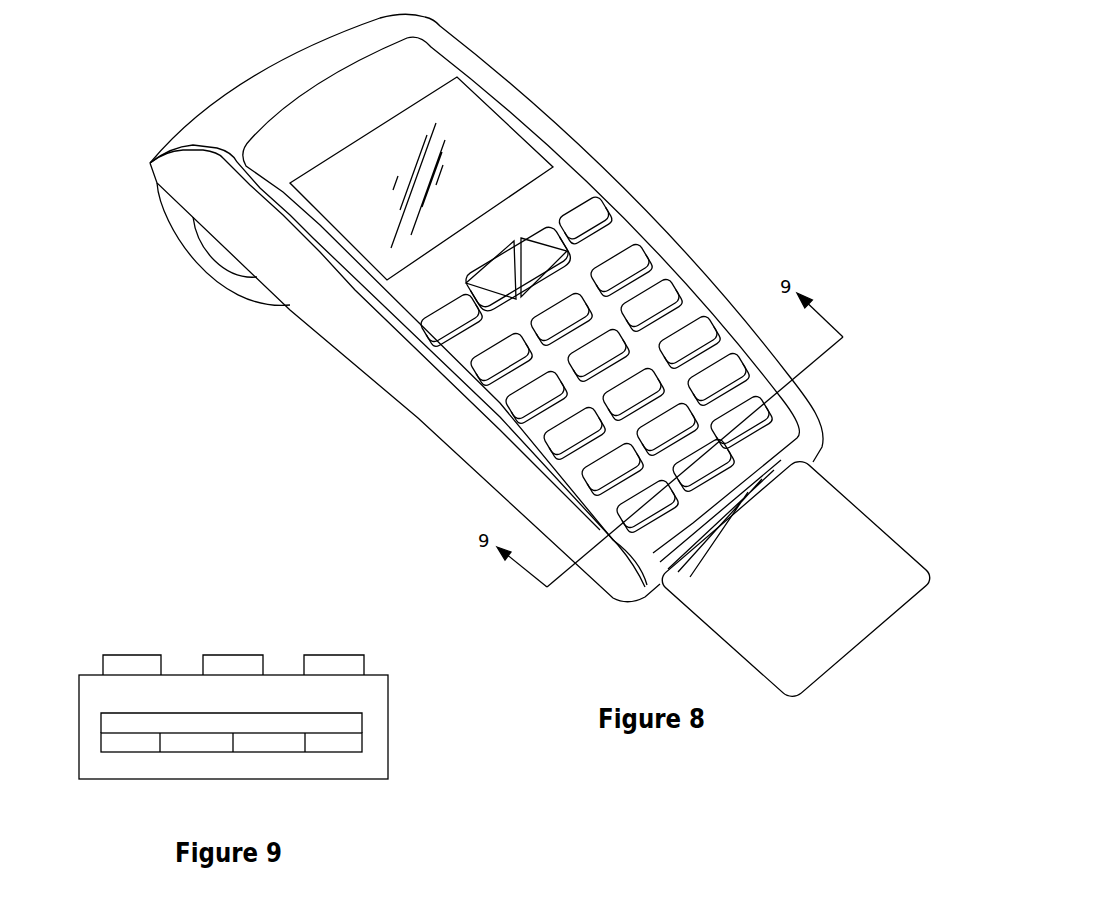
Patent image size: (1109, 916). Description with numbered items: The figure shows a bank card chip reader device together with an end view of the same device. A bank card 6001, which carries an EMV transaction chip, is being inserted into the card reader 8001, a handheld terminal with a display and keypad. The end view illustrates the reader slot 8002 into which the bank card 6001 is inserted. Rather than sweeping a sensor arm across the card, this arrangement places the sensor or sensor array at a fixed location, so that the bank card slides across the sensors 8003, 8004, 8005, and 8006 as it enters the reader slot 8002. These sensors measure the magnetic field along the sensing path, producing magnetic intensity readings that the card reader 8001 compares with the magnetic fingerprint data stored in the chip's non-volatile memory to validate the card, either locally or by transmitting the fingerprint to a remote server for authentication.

In FIG. 8, the card reader 8001 is at (686, 98).
In FIG. 9, the card reader 8001 is at (94, 600).
In FIG. 8, the bank card 6001 is at (881, 528).
In FIG. 9, the reader slot 8002 is at (362, 720).
In FIG. 9, the sensor 8003 is at (123, 752).
In FIG. 9, the sensor 8004 is at (202, 752).
In FIG. 9, the sensor 8005 is at (273, 752).
In FIG. 9, the sensor 8006 is at (362, 738).